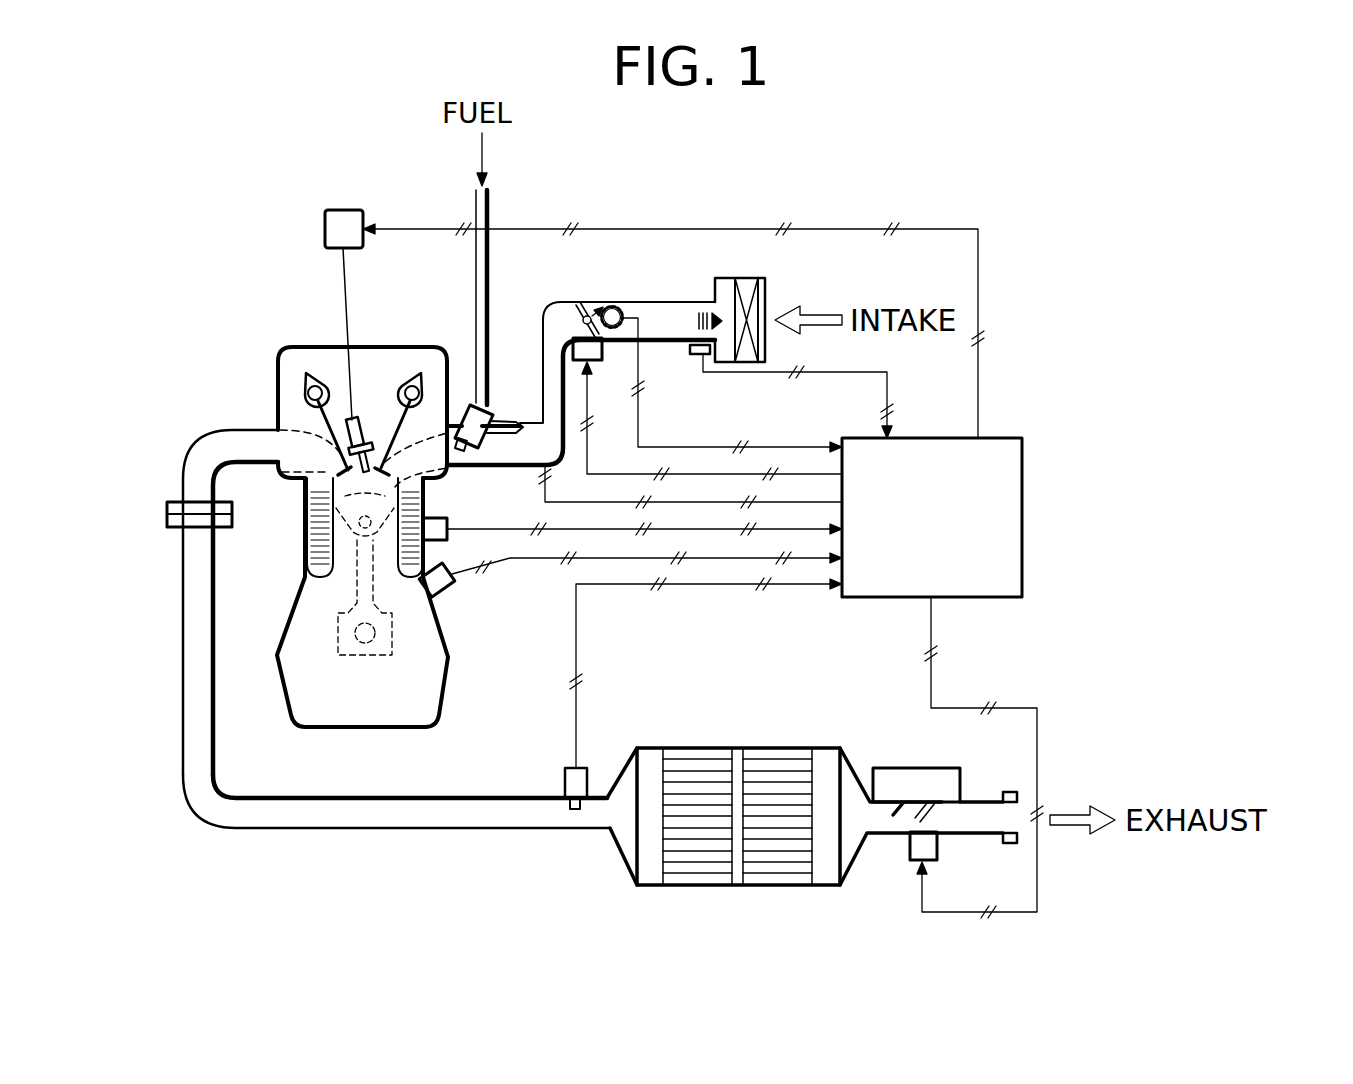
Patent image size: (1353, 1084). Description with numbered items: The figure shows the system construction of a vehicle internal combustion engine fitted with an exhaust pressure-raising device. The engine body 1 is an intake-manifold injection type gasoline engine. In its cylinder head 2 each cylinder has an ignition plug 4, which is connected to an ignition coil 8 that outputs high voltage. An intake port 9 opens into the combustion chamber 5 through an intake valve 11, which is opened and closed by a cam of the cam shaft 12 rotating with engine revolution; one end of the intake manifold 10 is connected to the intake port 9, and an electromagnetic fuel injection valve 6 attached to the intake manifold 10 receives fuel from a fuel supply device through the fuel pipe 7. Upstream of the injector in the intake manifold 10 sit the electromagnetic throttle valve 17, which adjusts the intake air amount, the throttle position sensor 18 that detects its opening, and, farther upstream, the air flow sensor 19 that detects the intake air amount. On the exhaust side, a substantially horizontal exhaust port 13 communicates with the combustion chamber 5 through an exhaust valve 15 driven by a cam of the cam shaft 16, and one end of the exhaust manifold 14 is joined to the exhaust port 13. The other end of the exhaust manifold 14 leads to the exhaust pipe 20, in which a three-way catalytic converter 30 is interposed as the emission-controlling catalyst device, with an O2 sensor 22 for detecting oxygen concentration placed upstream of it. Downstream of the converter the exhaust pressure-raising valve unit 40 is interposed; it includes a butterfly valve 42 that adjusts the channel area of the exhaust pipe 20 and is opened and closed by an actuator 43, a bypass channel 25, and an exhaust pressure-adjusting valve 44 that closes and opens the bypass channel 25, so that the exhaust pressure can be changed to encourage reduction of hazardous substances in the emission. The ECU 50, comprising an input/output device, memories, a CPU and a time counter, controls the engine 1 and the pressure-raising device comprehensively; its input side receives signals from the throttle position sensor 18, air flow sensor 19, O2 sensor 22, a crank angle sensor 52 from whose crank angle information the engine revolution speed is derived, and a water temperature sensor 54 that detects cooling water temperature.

The engine body 1 is at (276, 349).
The cylinder head 2 is at (310, 346).
The ignition plug 4 is at (366, 424).
The combustion chamber 5 is at (297, 540).
The fuel injection valve 6 is at (493, 402).
The fuel pipe 7 is at (490, 203).
The ignition coil 8 is at (341, 208).
The intake port 9 is at (452, 400).
The intake manifold 10 is at (509, 455).
The intake valve 11 is at (400, 384).
The cam shaft 12 is at (420, 372).
The exhaust port 13 is at (283, 478).
The exhaust manifold 14 is at (185, 463).
The exhaust valve 15 is at (312, 420).
The cam shaft 16 is at (300, 385).
The throttle valve 17 is at (583, 300).
The throttle position sensor 18 is at (620, 303).
The air flow sensor 19 is at (698, 357).
The exhaust pipe 20 is at (332, 830).
The O2 sensor 22 is at (580, 768).
The bypass channel 25 is at (937, 768).
The three-way catalytic converter 30 is at (740, 748).
The exhaust pressure-raising valve unit 40 is at (909, 868).
The butterfly valve 42 is at (912, 822).
The actuator 43 is at (937, 848).
The exhaust pressure-adjusting valve 44 is at (890, 792).
The ECU 50 is at (1025, 462).
The crank angle sensor 52 is at (452, 592).
The water temperature sensor 54 is at (430, 517).